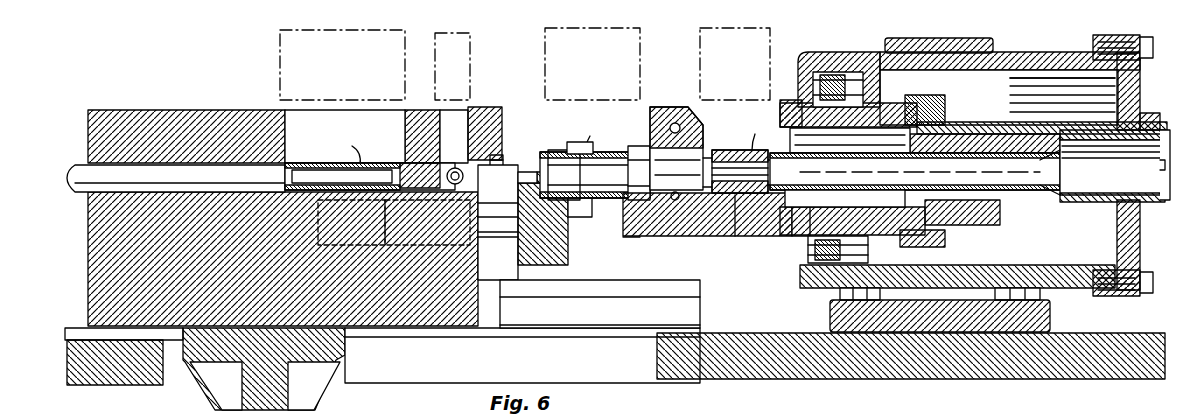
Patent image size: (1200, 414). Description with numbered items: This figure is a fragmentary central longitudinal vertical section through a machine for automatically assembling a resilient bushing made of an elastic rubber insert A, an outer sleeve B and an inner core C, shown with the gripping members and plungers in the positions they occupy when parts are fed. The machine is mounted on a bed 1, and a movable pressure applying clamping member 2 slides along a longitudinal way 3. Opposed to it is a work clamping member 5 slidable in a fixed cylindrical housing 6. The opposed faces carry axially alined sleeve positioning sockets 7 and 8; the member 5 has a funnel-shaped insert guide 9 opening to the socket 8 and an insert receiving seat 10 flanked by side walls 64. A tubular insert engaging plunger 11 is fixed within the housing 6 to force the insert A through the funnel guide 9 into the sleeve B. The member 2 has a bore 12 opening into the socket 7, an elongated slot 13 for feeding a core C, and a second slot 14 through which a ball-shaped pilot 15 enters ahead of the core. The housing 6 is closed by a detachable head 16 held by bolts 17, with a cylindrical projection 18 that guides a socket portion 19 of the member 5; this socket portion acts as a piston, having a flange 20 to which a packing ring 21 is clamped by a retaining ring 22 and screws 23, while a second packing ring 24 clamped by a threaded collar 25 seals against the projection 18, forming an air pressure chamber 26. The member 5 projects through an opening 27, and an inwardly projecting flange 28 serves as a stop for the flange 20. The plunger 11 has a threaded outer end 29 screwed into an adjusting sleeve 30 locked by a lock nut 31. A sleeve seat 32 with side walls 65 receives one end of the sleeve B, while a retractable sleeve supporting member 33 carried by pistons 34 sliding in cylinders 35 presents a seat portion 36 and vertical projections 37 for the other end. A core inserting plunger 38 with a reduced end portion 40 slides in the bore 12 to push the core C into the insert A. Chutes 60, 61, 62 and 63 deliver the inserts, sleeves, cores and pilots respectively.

The bed 1 is at (710, 375).
The pressure applying clamping member 2 is at (145, 110).
The longitudinal way 3 is at (550, 313).
The work clamping member 5 is at (725, 237).
The cylindrical housing 6 is at (1045, 52).
The sleeve positioning socket 7 is at (504, 160).
The sleeve positioning socket 8 is at (676, 148).
The funnel-shaped insert guide 9 is at (681, 214).
The insert receiving seat 10 is at (752, 215).
The tubular insert engaging plunger 11 is at (850, 148).
The bore 12 is at (500, 128).
The elongated slot 13 is at (312, 118).
The second slot 14 is at (450, 112).
The pilot 15 is at (455, 168).
The detachable head 16 is at (1140, 82).
The bolts 17 is at (1153, 50).
The cylindrical projection 18 is at (1045, 125).
The socket portion 19 is at (850, 78).
The external circumferential flange 20 is at (812, 58).
The packing ring 21 is at (965, 78).
The retaining ring 22 is at (852, 220).
The screws 23 is at (868, 253).
The second packing ring 24 is at (955, 122).
The threaded collar 25 is at (1020, 80).
The pressure chamber 26 is at (1010, 248).
The opening 27 is at (795, 100).
The inwardly projecting flange 28 is at (796, 240).
The threaded outer end 29 is at (1062, 160).
The adjusting sleeve 30 is at (1165, 190).
The lock nut 31 is at (1160, 120).
The sleeve seat 32 is at (636, 238).
The retractable sleeve supporting member 33 is at (568, 250).
The pistons 34 is at (505, 238).
The cylinders 35 is at (332, 246).
The sleeve receiving seat portion 36 is at (545, 165).
The vertical projections 37 is at (580, 214).
The core inserting plunger 38 is at (80, 165).
The reduced end portion 40 is at (248, 180).
The chute 60 is at (772, 50).
The chute 61 is at (640, 62).
The chute 62 is at (280, 68).
The chute 63 is at (470, 60).
The side walls 64 is at (740, 148).
The side walls 65 is at (640, 148).
The elastic rubber insert A is at (756, 132).
The outer sleeve B is at (595, 157).
The inner core C is at (342, 156).